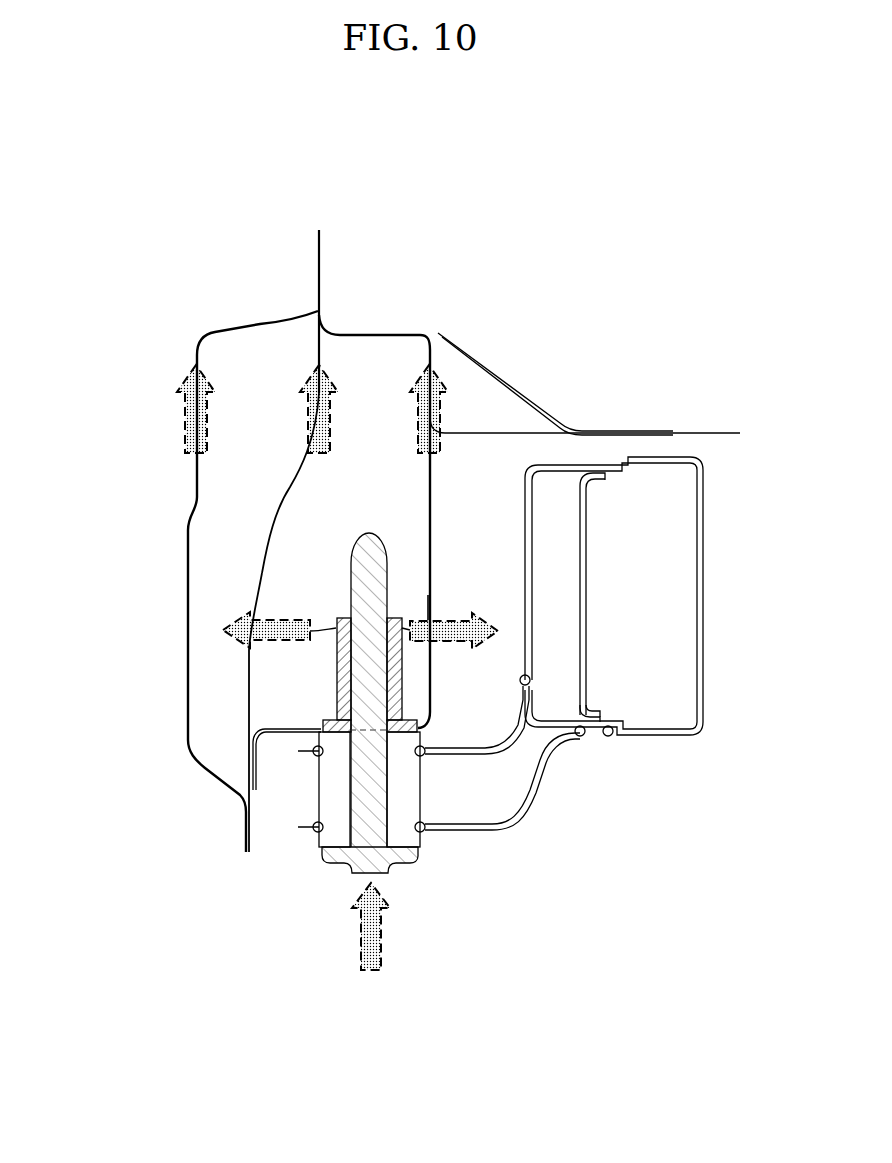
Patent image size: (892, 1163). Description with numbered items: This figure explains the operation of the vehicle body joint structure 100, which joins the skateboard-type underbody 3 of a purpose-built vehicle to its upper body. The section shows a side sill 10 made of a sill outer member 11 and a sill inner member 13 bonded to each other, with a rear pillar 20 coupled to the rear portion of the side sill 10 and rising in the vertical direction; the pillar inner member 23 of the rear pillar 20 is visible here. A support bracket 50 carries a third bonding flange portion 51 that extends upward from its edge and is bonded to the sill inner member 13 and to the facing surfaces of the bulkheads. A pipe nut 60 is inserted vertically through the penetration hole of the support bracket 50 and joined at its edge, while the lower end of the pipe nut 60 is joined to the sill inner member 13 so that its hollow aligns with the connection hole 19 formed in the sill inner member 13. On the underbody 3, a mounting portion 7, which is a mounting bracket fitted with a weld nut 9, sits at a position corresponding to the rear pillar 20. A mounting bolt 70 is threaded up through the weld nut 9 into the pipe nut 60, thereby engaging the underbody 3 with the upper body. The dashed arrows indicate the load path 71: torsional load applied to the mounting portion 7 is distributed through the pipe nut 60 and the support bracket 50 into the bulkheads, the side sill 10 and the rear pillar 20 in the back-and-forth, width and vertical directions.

The vehicle body joint structure 100 is at (429, 138).
The side sill 10 is at (174, 496).
The sill outer member 11 is at (195, 467).
The sill inner member 13 is at (430, 490).
The rear pillar 20 is at (254, 523).
The pillar inner member 23 is at (262, 573).
The connection hole 19 is at (360, 705).
The load path 71 is at (188, 410).
The support bracket 50 is at (312, 648).
The third bonding flange portion 51 is at (429, 610).
The pipe nut 60 is at (396, 688).
The weld nut 9 is at (330, 788).
The mounting bolt 70 is at (373, 828).
The mounting portion 7 is at (520, 825).
The underbody 3 is at (718, 597).